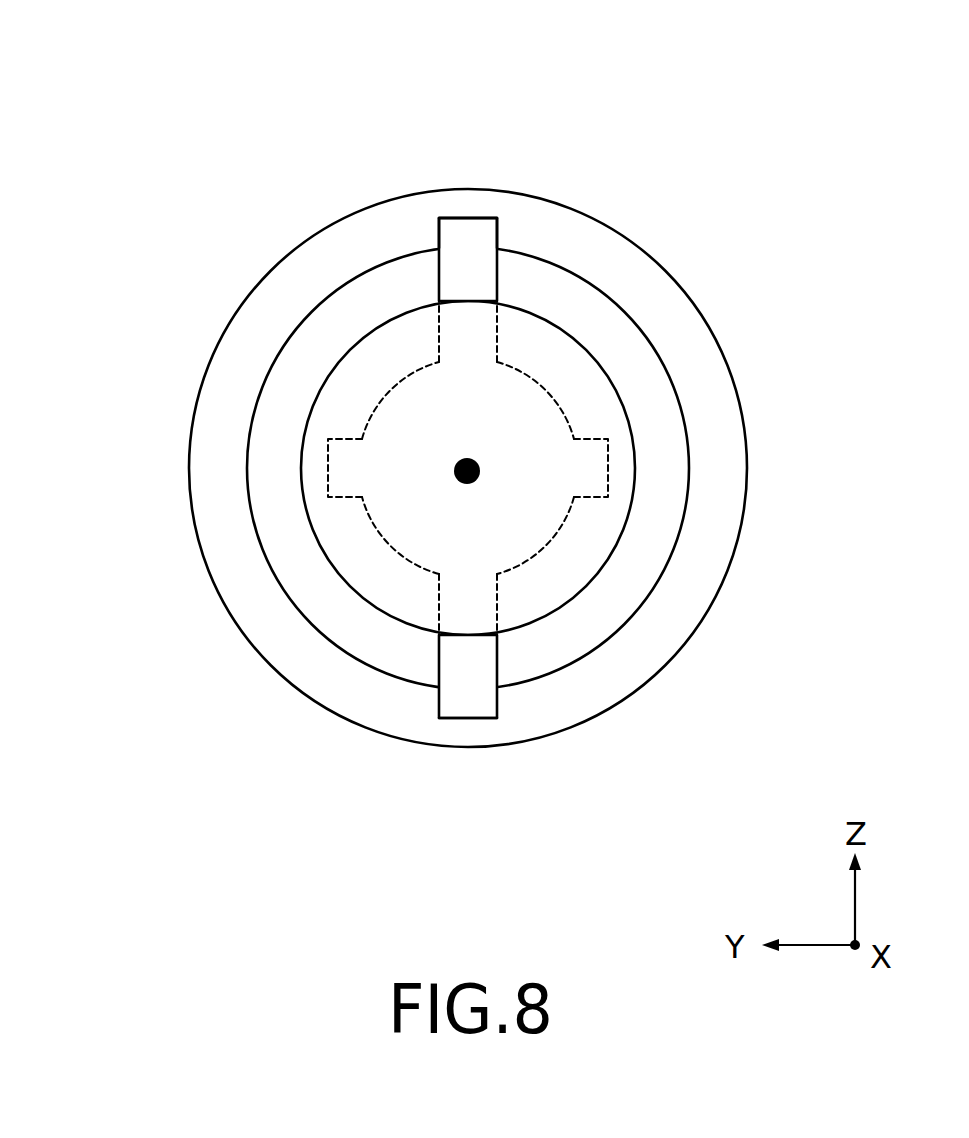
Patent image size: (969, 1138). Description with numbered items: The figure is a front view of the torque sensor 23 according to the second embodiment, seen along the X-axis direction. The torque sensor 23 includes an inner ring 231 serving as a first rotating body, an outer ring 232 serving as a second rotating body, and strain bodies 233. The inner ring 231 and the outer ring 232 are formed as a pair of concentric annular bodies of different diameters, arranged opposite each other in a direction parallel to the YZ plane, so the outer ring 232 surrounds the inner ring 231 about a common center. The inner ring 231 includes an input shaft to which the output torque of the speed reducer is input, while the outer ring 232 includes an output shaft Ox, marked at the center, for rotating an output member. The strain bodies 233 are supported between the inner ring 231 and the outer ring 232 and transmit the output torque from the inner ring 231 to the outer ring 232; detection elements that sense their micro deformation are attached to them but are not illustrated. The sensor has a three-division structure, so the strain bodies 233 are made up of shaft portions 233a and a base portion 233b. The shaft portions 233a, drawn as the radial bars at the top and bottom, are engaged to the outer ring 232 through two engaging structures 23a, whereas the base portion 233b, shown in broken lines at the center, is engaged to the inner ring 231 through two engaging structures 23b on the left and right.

The torque sensor 23 is at (584, 96).
The engaging structure 23a is at (473, 218).
The engaging structure 23b is at (328, 485).
The inner ring 231 is at (595, 553).
The outer ring 232 is at (723, 350).
The strain body 233 is at (167, 193).
The shaft portion 233a is at (438, 277).
The base portion 233b is at (392, 381).
The output shaft Ox is at (470, 460).